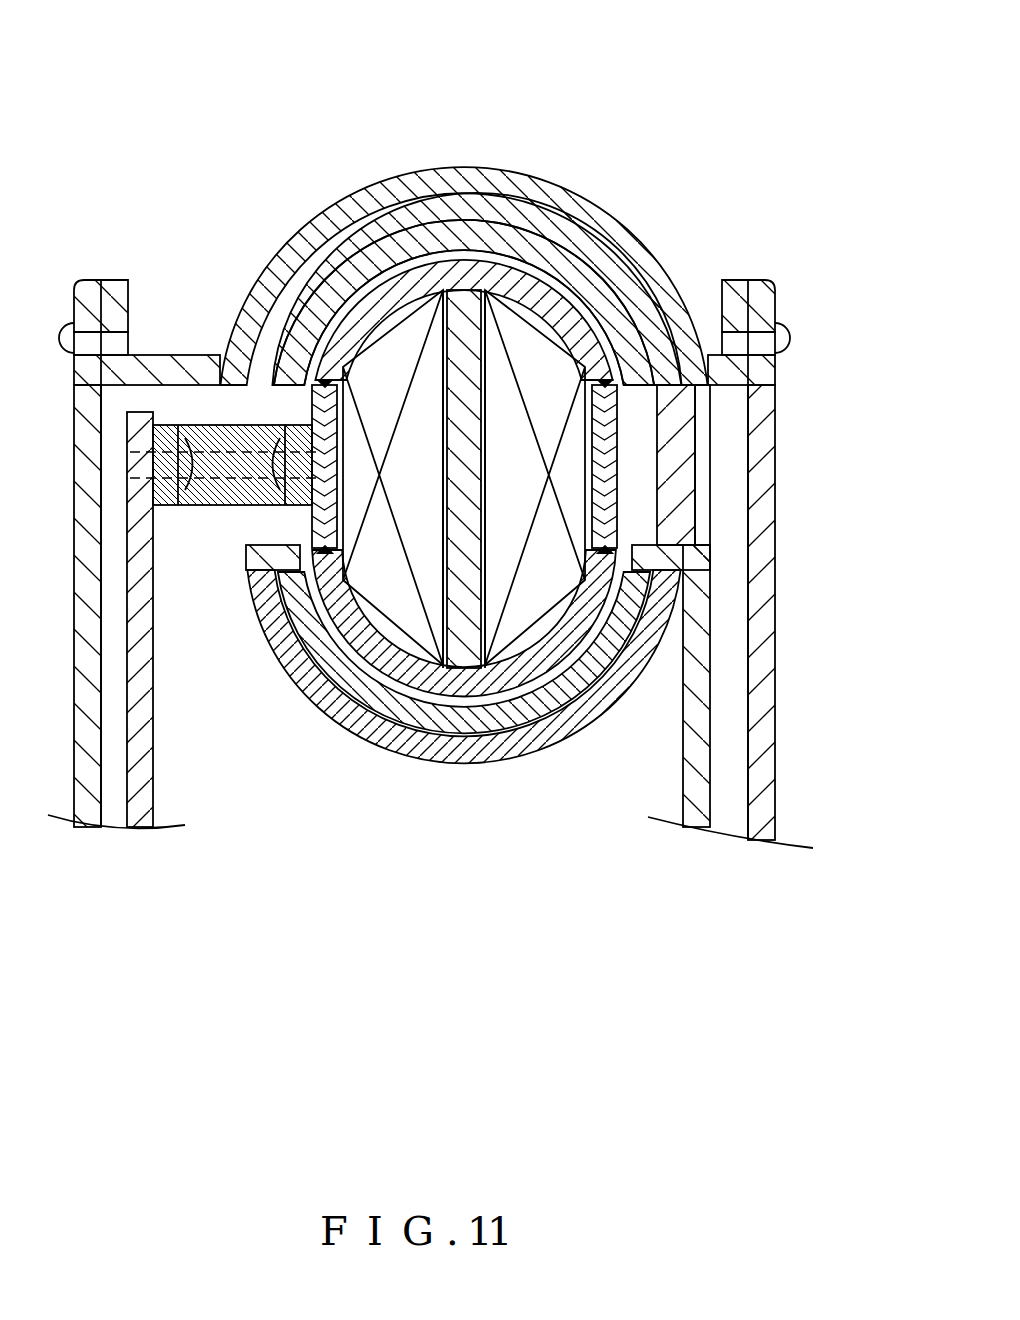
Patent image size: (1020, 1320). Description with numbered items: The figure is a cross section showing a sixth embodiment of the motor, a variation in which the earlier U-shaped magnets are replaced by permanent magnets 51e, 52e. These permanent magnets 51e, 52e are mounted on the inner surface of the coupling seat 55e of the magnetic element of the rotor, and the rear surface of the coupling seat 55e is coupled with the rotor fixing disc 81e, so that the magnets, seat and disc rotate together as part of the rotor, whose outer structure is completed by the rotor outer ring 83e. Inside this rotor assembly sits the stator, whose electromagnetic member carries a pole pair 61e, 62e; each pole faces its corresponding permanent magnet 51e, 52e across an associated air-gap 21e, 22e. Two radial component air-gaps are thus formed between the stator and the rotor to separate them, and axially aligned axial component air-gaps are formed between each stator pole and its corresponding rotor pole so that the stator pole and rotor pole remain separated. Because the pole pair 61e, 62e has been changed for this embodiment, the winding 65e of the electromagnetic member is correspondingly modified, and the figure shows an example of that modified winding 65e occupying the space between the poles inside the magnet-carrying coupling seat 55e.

The rotor outer ring 83e is at (405, 180).
The coupling seat of the magnetic element 55e is at (448, 203).
The permanent magnet 51e is at (500, 238).
The pole of the electromagnetic member of the stator 61e is at (513, 283).
The air-gap 21e is at (563, 277).
The rotor fixing disc 81e is at (705, 632).
The winding of the electromagnetic member 65e is at (400, 597).
The permanent magnet 52e is at (435, 725).
The pole of the electromagnetic member of the stator 62e is at (488, 678).
The air-gap 22e is at (537, 683).